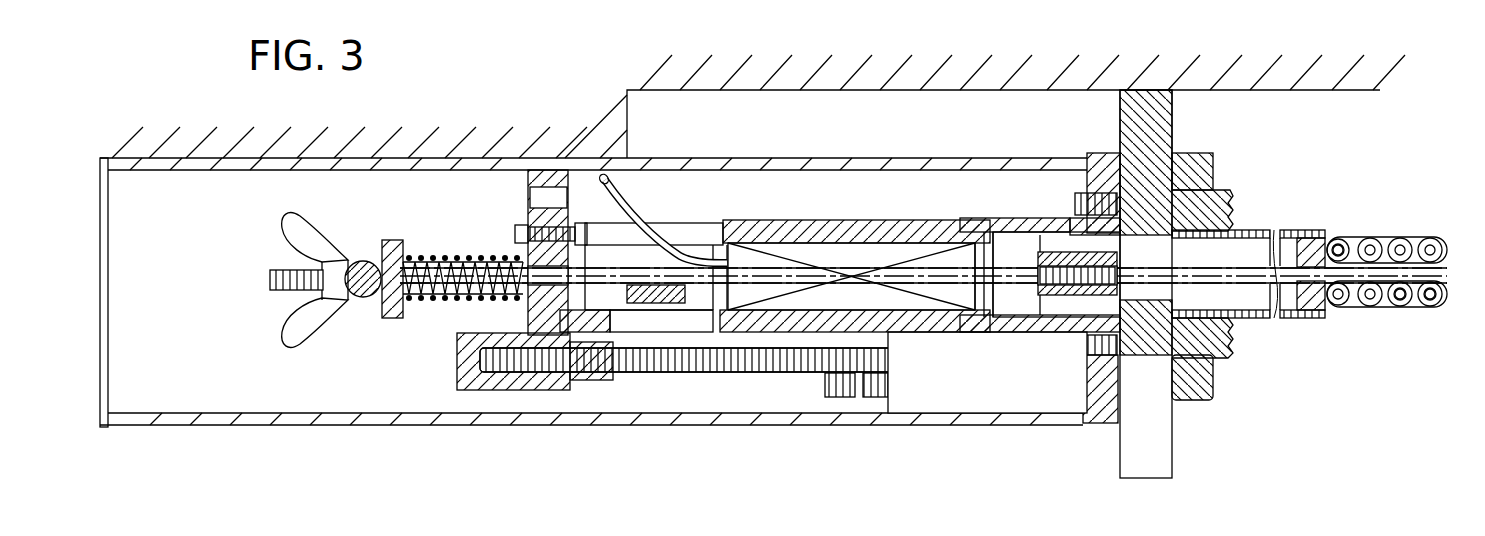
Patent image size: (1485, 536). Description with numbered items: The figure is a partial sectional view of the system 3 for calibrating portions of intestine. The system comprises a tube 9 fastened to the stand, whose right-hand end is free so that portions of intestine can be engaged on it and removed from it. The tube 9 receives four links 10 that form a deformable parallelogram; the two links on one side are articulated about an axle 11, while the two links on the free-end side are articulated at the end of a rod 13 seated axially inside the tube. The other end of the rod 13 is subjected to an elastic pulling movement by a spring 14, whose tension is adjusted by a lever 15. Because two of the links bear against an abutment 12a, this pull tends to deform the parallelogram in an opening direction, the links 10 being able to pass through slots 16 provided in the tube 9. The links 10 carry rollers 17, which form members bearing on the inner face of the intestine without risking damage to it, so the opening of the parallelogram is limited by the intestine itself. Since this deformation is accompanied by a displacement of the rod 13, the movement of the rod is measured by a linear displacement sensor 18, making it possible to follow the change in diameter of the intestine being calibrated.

The system for calibrating the portions of intestine 3 is at (512, 104).
The tube 9 is at (1283, 320).
The links 10 is at (1350, 306).
The axle 11 is at (1340, 246).
The abutment 12a is at (1318, 235).
The rod 13 is at (957, 282).
The spring 14 is at (430, 300).
The lever 15 is at (304, 345).
The slots 16 is at (1400, 237).
The rollers 17 is at (1428, 306).
The linear displacement sensor 18 is at (806, 295).